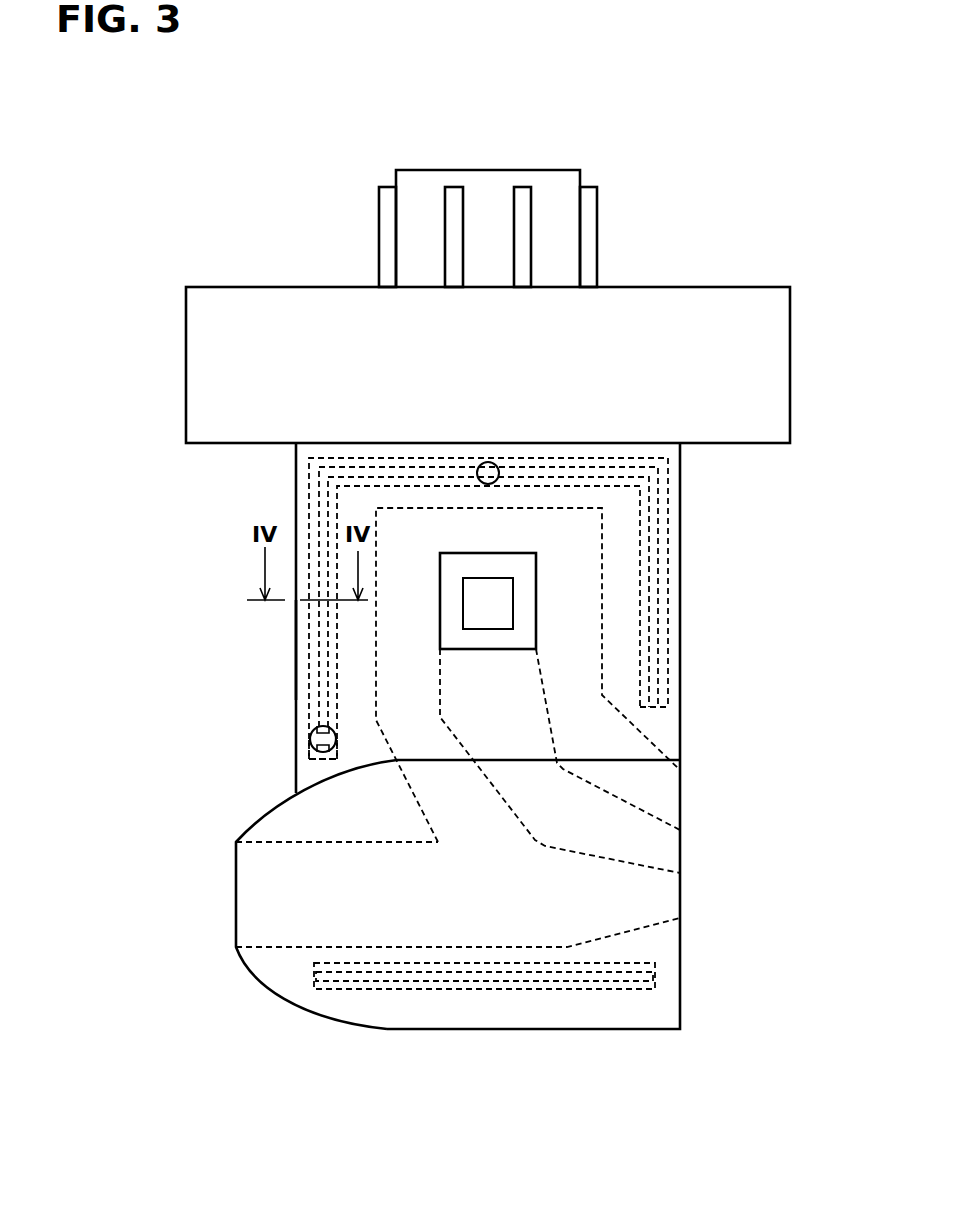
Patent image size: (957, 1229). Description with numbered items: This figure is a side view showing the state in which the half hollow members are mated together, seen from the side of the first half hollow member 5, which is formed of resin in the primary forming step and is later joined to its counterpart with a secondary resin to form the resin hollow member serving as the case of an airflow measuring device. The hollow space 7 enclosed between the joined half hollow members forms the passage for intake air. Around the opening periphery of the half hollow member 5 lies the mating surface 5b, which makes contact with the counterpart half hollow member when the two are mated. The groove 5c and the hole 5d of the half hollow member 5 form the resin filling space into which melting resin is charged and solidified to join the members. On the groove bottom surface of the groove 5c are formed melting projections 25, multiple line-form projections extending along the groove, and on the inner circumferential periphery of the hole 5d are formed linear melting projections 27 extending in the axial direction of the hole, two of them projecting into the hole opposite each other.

The half hollow member 5 is at (517, 1030).
The mating surface 5b is at (303, 660).
The groove 5c is at (300, 630).
The hole 5d is at (313, 731).
The hollow space 7 is at (437, 927).
The melting projection 25 is at (660, 612).
The melting projections 27 is at (311, 745).